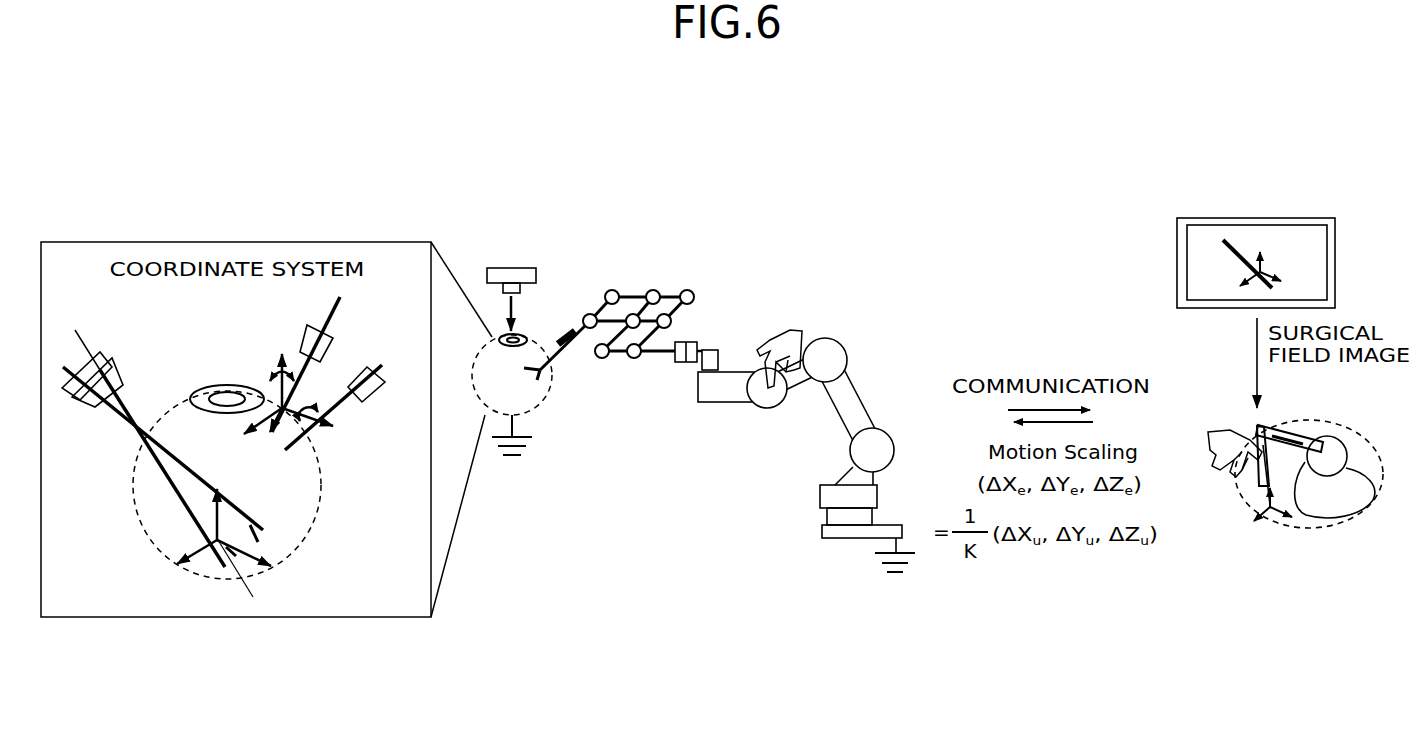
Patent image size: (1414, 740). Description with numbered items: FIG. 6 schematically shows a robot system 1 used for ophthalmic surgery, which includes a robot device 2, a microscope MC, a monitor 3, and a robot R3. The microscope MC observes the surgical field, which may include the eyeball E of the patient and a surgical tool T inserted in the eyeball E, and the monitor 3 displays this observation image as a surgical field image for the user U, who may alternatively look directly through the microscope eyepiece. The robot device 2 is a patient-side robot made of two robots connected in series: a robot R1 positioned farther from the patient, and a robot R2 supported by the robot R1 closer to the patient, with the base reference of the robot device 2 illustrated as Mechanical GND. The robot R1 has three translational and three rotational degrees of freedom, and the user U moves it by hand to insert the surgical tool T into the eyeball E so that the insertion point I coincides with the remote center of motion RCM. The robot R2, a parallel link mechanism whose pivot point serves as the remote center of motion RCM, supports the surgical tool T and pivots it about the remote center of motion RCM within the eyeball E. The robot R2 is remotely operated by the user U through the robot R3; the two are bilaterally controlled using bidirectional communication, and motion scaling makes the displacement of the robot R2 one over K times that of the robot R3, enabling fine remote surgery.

The robot system 1 is at (583, 145).
The robot device 2 is at (807, 212).
The monitor 3 is at (1335, 228).
The robot R1 is at (810, 302).
The robot R2 is at (672, 280).
The robot R3 is at (1338, 432).
The microscope MC is at (497, 266).
The remote center of motion RCM is at (548, 348).
The insertion point I is at (557, 342).
The surgical tool T is at (548, 357).
The eyeball E is at (303, 520).
The user U is at (780, 328).